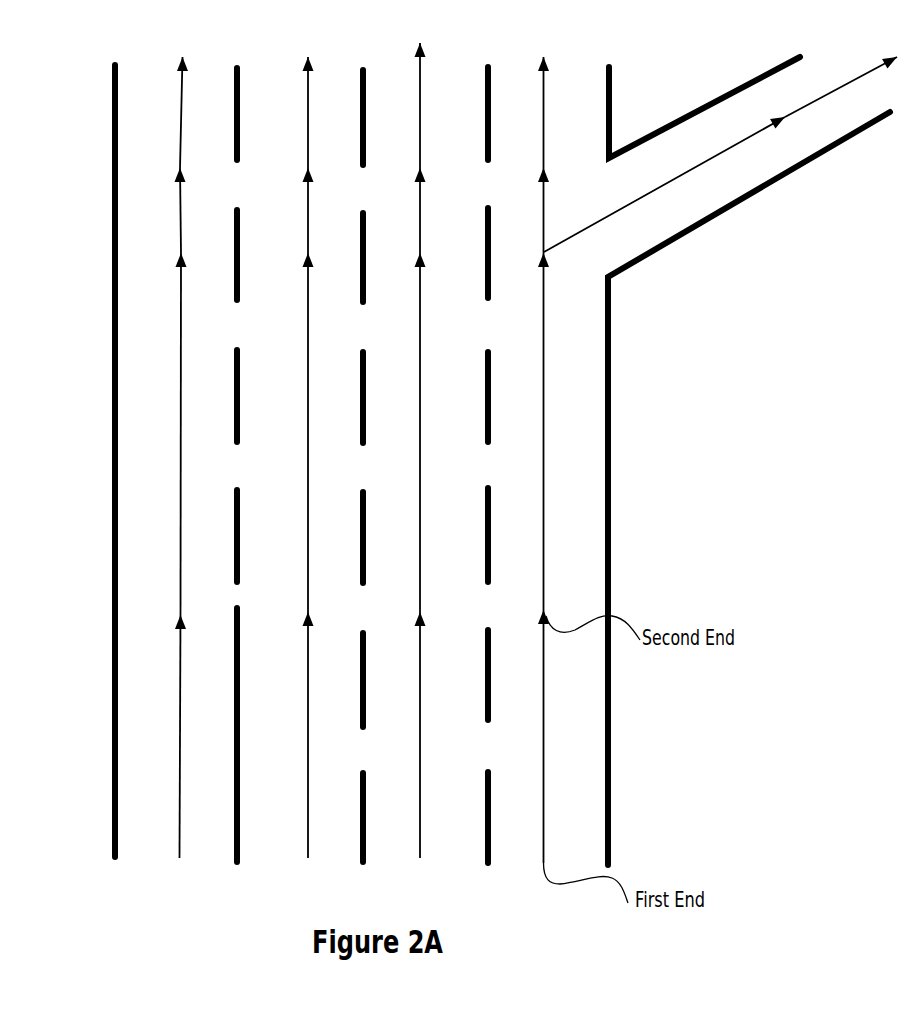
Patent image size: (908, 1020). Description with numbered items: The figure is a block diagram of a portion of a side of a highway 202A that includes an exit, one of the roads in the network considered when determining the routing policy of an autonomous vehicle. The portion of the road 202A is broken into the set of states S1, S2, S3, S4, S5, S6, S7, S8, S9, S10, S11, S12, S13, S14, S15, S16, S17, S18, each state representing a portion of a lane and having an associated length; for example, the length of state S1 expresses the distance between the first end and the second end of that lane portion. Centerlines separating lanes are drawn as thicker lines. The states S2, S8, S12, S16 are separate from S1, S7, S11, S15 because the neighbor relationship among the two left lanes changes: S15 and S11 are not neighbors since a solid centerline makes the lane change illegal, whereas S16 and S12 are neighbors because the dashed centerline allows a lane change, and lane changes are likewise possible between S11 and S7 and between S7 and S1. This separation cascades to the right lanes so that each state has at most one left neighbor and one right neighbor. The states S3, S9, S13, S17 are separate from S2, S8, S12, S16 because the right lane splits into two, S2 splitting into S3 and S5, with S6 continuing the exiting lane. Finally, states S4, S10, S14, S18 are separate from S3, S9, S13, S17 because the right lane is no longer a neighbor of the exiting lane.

The state S1 is at (528, 736).
The state S2 is at (528, 431).
The state S3 is at (527, 210).
The state S4 is at (527, 112).
The state S5 is at (666, 182).
The state S6 is at (842, 84).
The state S7 is at (404, 735).
The state S8 is at (407, 432).
The state S9 is at (410, 210).
The state S10 is at (403, 105).
The state S11 is at (284, 735).
The state S12 is at (286, 432).
The state S13 is at (288, 210).
The state S14 is at (286, 112).
The state S15 is at (158, 736).
The state S16 is at (161, 434).
The state S17 is at (162, 210).
The state S18 is at (161, 112).
The highway 202A is at (611, 498).